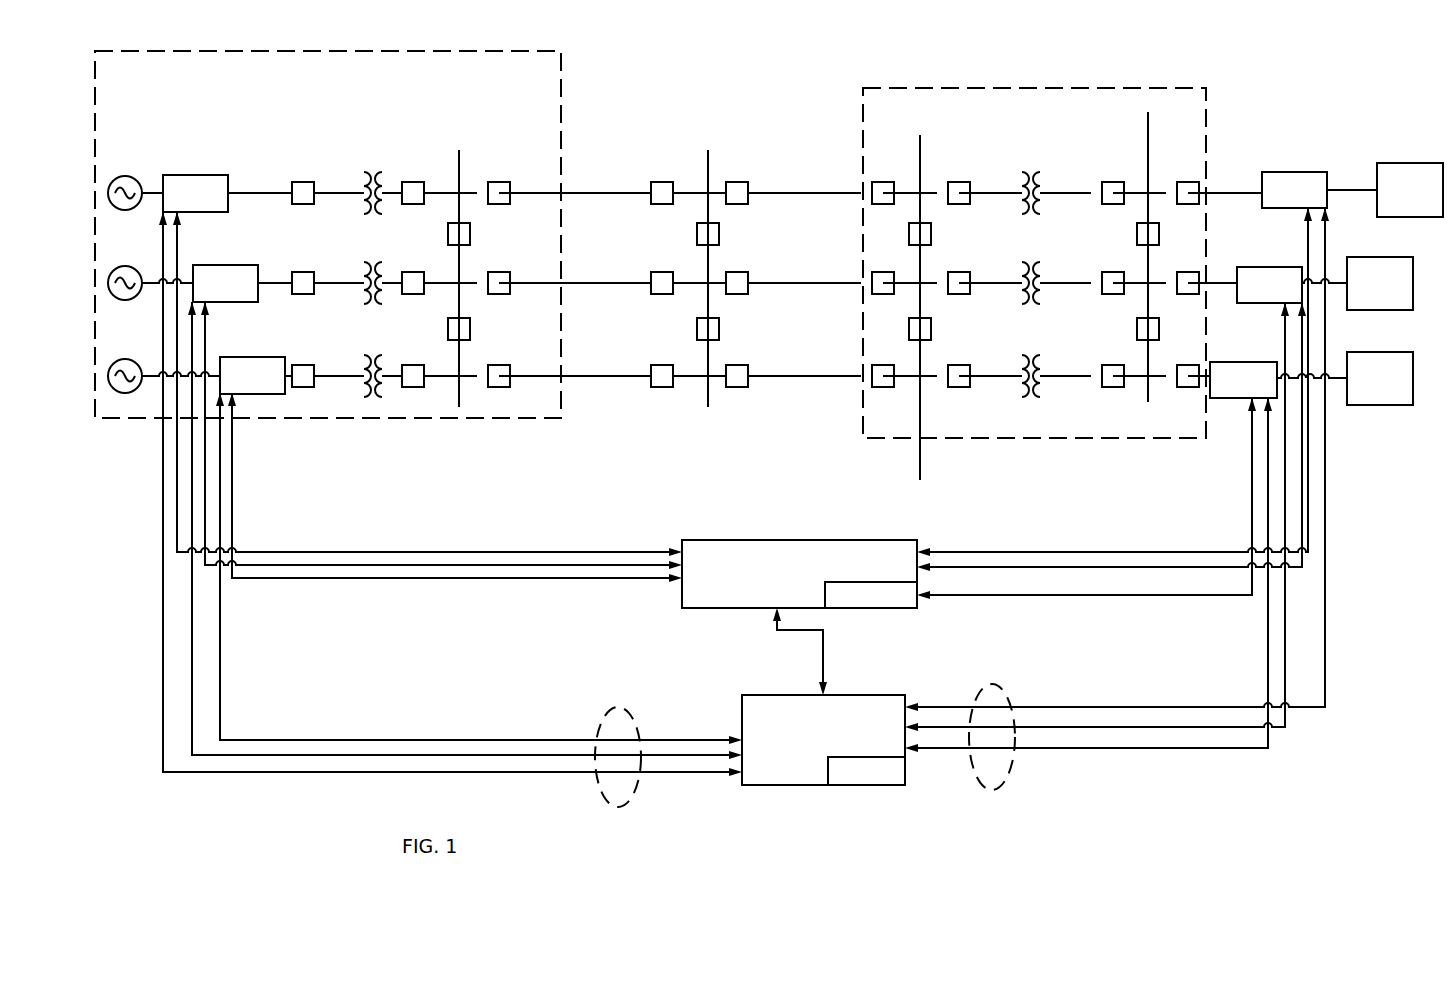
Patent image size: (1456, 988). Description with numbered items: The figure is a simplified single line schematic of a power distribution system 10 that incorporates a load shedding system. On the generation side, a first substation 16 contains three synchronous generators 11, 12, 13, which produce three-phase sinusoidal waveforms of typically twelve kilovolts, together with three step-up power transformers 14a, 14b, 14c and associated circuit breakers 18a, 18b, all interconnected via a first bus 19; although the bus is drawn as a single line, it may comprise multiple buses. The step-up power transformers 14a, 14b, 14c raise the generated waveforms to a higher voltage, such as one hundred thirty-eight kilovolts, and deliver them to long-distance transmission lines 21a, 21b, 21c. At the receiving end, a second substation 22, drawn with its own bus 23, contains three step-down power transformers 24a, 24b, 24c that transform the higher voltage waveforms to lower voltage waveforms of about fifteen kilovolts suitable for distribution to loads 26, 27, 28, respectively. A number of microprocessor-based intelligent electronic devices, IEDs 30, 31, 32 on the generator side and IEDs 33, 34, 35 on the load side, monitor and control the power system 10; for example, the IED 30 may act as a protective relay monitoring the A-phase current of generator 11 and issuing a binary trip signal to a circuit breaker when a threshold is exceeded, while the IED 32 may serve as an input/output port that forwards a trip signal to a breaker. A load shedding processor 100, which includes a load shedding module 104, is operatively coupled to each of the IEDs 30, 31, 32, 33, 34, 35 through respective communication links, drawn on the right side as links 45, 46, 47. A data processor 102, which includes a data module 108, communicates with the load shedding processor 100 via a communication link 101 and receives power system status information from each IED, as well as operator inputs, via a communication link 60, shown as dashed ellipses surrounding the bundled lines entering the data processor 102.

The power distribution system 10 is at (745, 37).
The synchronous generator 11 is at (118, 178).
The synchronous generator 12 is at (120, 268).
The synchronous generator 13 is at (126, 360).
The step-up power transformer 14a is at (385, 172).
The step-up power transformer 14b is at (368, 263).
The step-up power transformer 14c is at (369, 357).
The first substation 16 is at (512, 51).
The circuit breaker 18a is at (325, 182).
The circuit breaker 18b is at (417, 205).
The first bus 19 is at (462, 268).
The transmission line 21a is at (617, 192).
The transmission line 21b is at (580, 282).
The transmission line 21c is at (582, 375).
The second substation 22 is at (1085, 88).
The bus 23 is at (922, 160).
The step-down power transformer 24a is at (1042, 174).
The step-down power transformer 24b is at (1042, 264).
The step-down power transformer 24c is at (1042, 358).
The load 26 is at (1415, 150).
The load 27 is at (1395, 246).
The load 28 is at (1395, 341).
The intelligent electronic device (IED) 30 is at (210, 175).
The intelligent electronic device (IED) 31 is at (236, 265).
The intelligent electronic device (IED) 32 is at (263, 357).
The intelligent electronic device (IED) 33 is at (1290, 172).
The intelligent electronic device (IED) 34 is at (1272, 267).
The intelligent electronic device (IED) 35 is at (1245, 362).
The communication link 45 is at (951, 549).
The communication link 46 is at (1102, 568).
The communication link 47 is at (1116, 597).
The communication link 60 is at (620, 700).
The load shedding processor 100 is at (799, 556).
The communication link 101 is at (800, 636).
The data processor 102 is at (823, 722).
The load shedding module 104 is at (871, 595).
The data module 108 is at (866, 771).